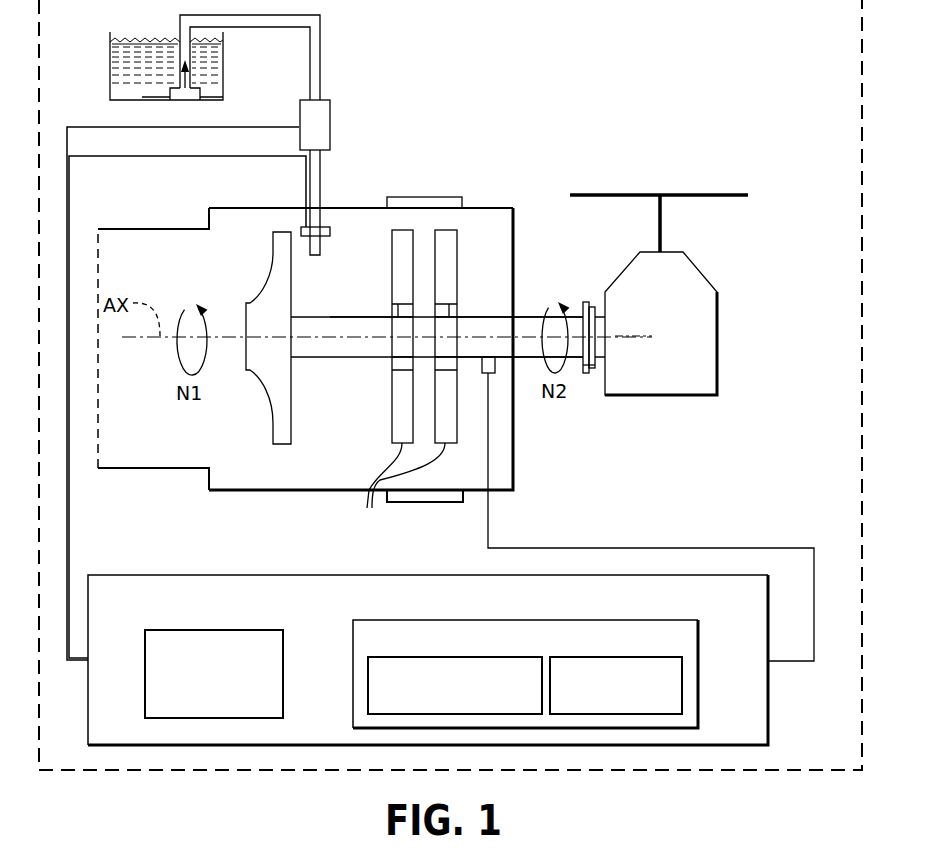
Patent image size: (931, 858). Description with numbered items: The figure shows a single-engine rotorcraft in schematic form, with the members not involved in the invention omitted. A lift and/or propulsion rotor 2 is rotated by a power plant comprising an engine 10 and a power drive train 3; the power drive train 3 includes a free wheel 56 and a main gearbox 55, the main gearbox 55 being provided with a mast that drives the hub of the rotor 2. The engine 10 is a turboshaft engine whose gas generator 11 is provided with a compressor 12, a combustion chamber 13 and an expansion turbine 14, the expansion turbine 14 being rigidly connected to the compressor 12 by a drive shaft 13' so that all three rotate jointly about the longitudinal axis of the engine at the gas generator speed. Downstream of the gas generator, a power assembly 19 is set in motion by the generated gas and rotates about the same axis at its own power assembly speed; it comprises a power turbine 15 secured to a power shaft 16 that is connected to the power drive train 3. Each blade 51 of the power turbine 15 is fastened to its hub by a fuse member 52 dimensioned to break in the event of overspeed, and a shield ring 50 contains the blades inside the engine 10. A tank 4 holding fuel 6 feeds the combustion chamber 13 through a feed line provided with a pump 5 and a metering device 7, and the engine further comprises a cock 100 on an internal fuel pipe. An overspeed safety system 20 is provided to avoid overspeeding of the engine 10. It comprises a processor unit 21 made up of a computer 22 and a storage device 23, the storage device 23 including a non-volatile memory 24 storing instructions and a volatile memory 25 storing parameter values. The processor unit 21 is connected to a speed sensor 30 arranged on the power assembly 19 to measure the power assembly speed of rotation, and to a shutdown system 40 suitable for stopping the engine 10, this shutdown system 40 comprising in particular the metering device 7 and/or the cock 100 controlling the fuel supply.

The rotor 2 is at (698, 212).
The power drive train 3 is at (679, 364).
The tank 4 is at (109, 68).
The pump 5 is at (197, 95).
The fuel 6 is at (160, 42).
The metering device 7 is at (332, 140).
The engine 10 is at (353, 344).
The gas generator 11 is at (353, 228).
The compressor 12 is at (273, 280).
The combustion chamber 13 is at (437, 313).
The drive shaft 13' is at (361, 288).
The expansion turbine 14 is at (404, 238).
The power turbine 15 is at (480, 238).
The power shaft 16 is at (536, 316).
The power assembly 19 is at (502, 300).
The overspeed safety system 20 is at (780, 683).
The processor unit 21 is at (268, 573).
The computer 22 is at (230, 630).
The storage device 23 is at (580, 620).
The non-volatile memory 24 is at (368, 685).
The volatile memory 25 is at (685, 687).
The speed sensor 30 is at (492, 372).
The shutdown system 40 is at (355, 55).
The shield ring 50 is at (450, 502).
The blade 51 is at (400, 489).
The fuse member 52 is at (405, 312).
The main gearbox 55 is at (718, 343).
The free wheel 56 is at (592, 374).
The cock 100 is at (353, 344).